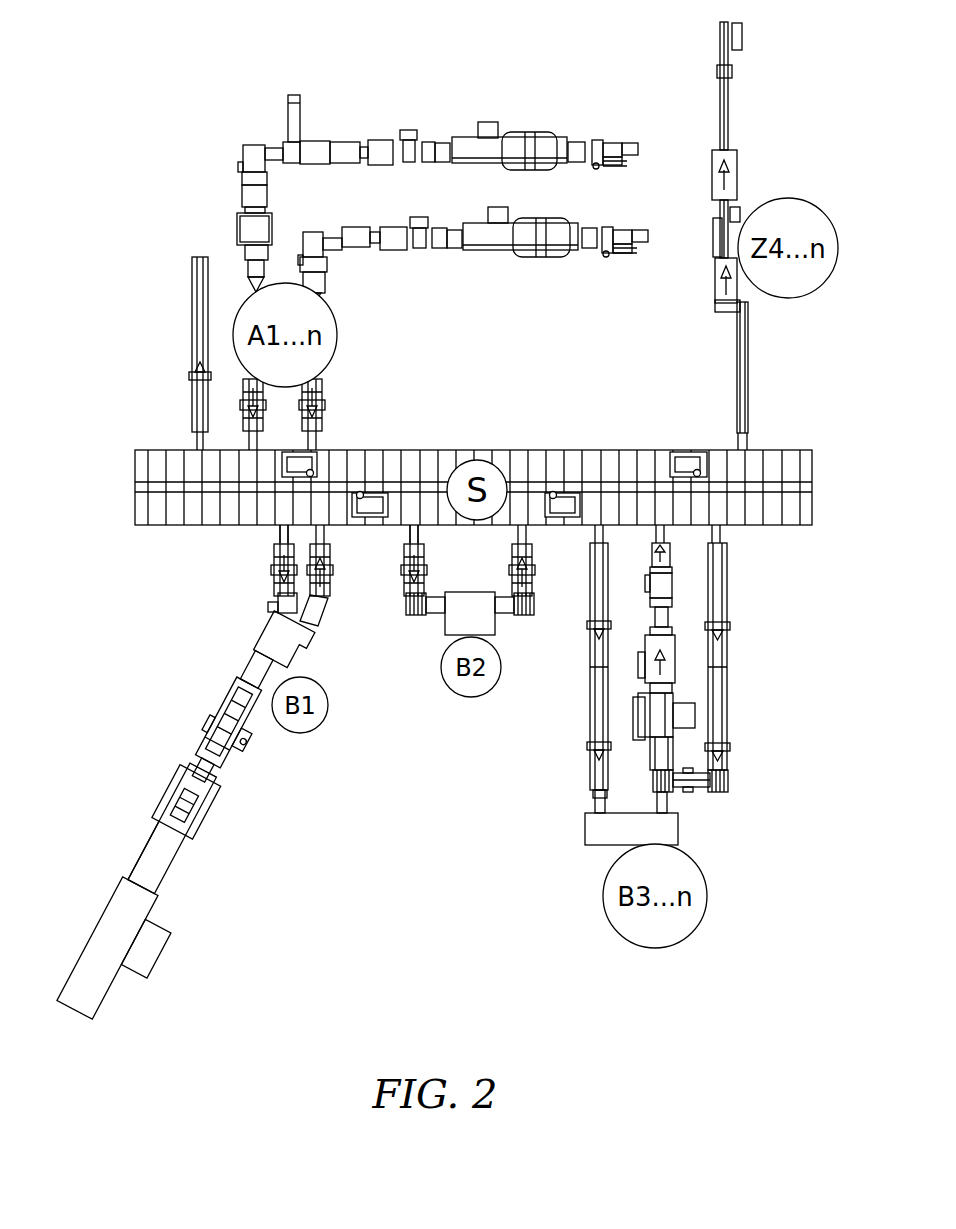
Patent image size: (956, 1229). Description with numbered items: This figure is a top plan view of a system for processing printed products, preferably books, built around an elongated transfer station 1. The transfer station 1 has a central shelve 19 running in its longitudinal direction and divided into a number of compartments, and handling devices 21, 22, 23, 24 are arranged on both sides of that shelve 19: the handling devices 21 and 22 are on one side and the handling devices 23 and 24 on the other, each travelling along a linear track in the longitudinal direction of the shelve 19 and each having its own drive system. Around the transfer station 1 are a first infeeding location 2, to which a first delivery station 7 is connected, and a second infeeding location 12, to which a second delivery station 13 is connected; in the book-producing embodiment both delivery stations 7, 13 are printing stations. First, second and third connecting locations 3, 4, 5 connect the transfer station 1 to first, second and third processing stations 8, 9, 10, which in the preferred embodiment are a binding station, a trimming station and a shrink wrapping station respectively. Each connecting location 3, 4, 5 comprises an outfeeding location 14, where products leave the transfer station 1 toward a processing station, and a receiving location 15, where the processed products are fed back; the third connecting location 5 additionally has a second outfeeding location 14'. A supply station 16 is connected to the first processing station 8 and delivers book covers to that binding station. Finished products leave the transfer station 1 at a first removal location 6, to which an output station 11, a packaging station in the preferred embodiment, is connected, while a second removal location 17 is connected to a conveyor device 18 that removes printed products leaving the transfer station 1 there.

The transfer station 1 is at (134, 515).
The first infeeding location 2 is at (245, 450).
The first connecting location 3 is at (274, 535).
The second connecting location 4 is at (406, 532).
The third connecting location 5 is at (728, 537).
The first removal location 6 is at (748, 450).
The first delivery station 7 is at (250, 142).
The first processing station 8 is at (257, 752).
The second processing station 9 is at (444, 641).
The third processing station 10 is at (694, 797).
The output station 11 is at (742, 185).
The second infeeding location 12 is at (320, 450).
The second delivery station 13 is at (484, 254).
The outfeeding location 14 is at (402, 561).
The second outfeeding location 14' is at (752, 575).
The receiving location 15 is at (330, 528).
The supply station 16 is at (100, 925).
The second removal location 17 is at (196, 450).
The conveyor device 18 is at (190, 305).
The central shelve 19 is at (142, 487).
The handling device 21 is at (314, 470).
The handling device 22 is at (696, 450).
The handling device 23 is at (568, 524).
The handling device 24 is at (377, 524).